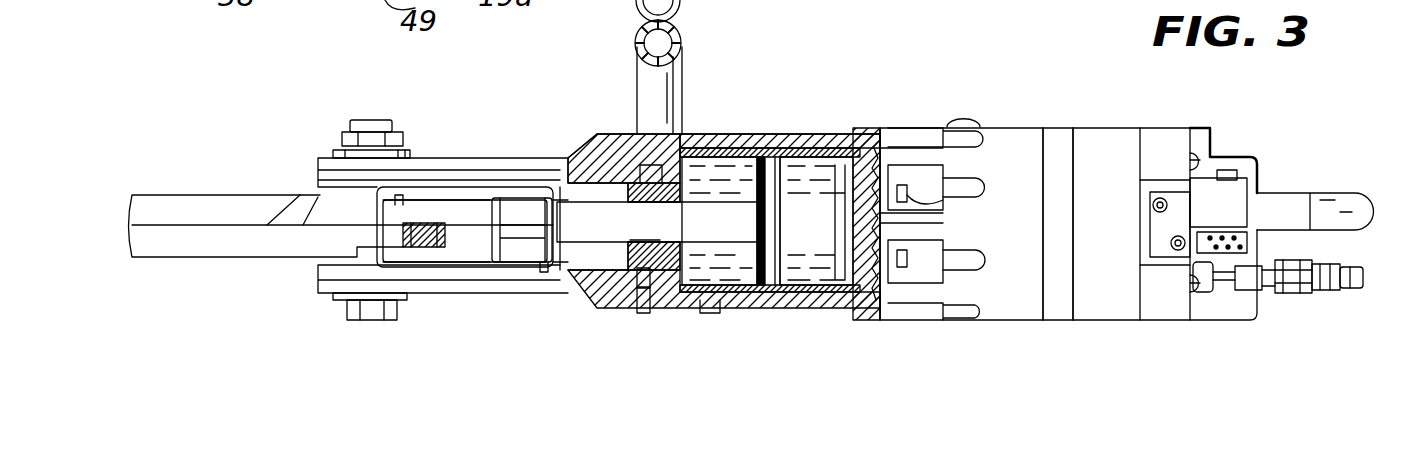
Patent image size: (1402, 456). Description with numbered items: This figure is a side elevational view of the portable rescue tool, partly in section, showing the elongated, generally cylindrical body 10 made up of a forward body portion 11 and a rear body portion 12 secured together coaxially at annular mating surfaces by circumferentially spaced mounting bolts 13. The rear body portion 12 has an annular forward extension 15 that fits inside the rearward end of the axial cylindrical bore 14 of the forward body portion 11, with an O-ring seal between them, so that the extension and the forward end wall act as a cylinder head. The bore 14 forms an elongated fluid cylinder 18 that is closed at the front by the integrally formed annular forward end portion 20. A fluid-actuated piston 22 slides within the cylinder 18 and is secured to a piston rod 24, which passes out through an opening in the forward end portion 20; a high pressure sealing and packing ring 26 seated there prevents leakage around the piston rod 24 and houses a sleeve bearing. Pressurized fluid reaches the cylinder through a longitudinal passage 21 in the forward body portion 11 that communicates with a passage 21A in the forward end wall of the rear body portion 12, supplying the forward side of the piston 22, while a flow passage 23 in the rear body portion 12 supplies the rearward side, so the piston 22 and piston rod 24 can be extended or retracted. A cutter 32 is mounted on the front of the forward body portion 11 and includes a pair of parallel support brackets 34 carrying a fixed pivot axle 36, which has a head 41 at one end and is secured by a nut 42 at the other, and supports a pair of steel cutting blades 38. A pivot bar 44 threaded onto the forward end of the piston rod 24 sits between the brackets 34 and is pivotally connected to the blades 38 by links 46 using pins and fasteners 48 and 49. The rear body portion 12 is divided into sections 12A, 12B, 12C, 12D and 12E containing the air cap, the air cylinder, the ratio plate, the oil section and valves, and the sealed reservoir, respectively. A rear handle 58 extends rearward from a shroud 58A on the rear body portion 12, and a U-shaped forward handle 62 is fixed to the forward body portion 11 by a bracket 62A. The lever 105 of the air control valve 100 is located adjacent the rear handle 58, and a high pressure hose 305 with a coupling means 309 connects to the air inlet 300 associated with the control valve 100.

The body 10 is at (897, 90).
The forward body portion 11 is at (730, 137).
The rear body portion 12 is at (1030, 132).
The air cap section 12A is at (1167, 287).
The air cylinder section 12B is at (1108, 277).
The ratio plate section 12C is at (1060, 287).
The oil section 12D is at (1027, 288).
The reservoir section 12E is at (927, 313).
The mounting bolts 13 is at (903, 190).
The cylindrical bore 14 is at (807, 287).
The annular forward extension 15 is at (818, 270).
The cylinder 18 is at (838, 240).
The forward end portion 20 is at (653, 308).
The longitudinal passage 21 is at (793, 147).
The passage 21A is at (890, 143).
The piston 22 is at (753, 280).
The flow passage 23 is at (880, 222).
The piston rod 24 is at (657, 222).
The sealing and packing ring 26 is at (640, 205).
The cutter 32 is at (302, 160).
The support brackets 34 is at (480, 277).
The pivot axle 36 is at (375, 117).
The cutting blades 38 is at (212, 170).
The head 41 is at (343, 313).
The nut 42 is at (403, 133).
The pivot bar 44 is at (513, 237).
The links 46 is at (463, 250).
The pins and fasteners 48 is at (527, 277).
The pins and fasteners 49 is at (408, 277).
The rear handle 58 is at (1358, 167).
The shroud 58A is at (1190, 127).
The U-shaped forward handle 62 is at (680, 47).
The bracket 62A is at (703, 310).
The air control valve 100 is at (1227, 200).
The lever 105 is at (1233, 170).
The air inlet 300 is at (1217, 273).
The high pressure hose 305 is at (1360, 293).
The coupling means 309 is at (1290, 293).